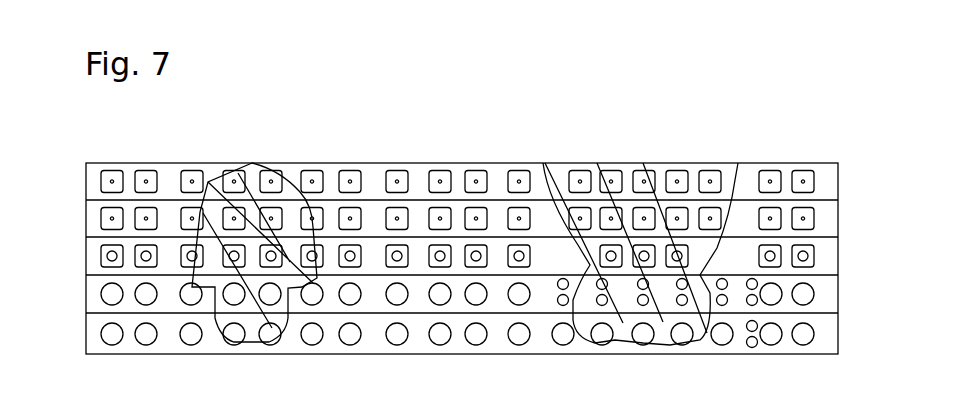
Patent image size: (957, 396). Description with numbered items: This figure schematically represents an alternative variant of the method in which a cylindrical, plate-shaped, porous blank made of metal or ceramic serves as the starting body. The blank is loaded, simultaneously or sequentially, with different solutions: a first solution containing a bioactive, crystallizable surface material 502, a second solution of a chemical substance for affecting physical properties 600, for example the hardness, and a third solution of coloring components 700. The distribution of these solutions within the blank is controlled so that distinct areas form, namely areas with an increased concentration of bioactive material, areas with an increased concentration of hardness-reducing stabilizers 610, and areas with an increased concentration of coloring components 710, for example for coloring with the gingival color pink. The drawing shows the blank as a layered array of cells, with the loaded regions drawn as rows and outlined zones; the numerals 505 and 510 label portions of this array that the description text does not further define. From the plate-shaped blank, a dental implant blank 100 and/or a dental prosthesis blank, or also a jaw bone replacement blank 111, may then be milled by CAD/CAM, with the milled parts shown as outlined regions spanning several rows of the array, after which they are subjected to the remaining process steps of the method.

The dental implant blank 100 is at (252, 164).
The jaw bone replacement blank 111 is at (615, 180).
The bioactive, crystallizable surface material 502 is at (712, 180).
The array panel 505 is at (462, 177).
The first group of rows (square cells with dots) 510 is at (863, 168).
The chemical substance for affecting physical properties 600 is at (580, 182).
The hardness-reducing stabilizers 610 is at (72, 237).
The coloring components 700 is at (440, 257).
The coloring components 710 is at (863, 240).